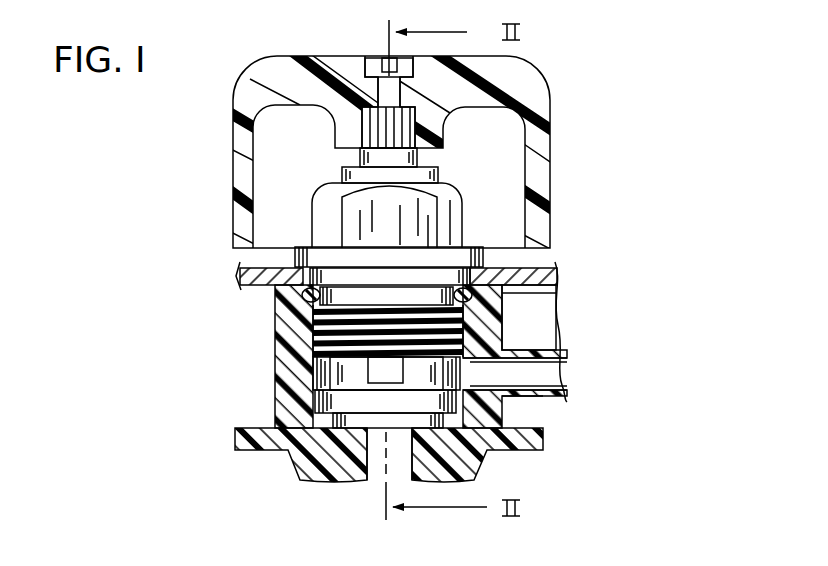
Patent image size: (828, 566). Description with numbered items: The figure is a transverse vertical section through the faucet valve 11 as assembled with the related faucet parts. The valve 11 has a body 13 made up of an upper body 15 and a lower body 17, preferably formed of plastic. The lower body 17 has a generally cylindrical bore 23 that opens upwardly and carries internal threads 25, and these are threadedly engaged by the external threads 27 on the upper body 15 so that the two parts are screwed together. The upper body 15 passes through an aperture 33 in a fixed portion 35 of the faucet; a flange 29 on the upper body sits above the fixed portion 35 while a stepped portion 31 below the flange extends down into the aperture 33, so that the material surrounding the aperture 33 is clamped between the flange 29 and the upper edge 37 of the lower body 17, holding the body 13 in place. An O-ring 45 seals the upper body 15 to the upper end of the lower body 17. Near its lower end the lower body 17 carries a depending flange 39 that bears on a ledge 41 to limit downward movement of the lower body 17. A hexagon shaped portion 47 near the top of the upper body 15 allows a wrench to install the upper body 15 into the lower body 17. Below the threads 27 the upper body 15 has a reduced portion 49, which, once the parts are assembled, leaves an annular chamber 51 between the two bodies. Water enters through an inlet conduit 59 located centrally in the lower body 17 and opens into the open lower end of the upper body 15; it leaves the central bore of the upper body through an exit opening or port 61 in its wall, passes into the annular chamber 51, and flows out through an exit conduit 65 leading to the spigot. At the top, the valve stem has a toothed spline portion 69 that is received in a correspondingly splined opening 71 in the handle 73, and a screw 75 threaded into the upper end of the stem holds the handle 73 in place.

The valve 11 is at (645, 162).
The body 13 is at (202, 342).
The upper body 15 is at (400, 296).
The lower body 17 is at (282, 369).
The cylindrical bore 23 is at (325, 363).
The internal threads 25 is at (502, 323).
The external threads 27 is at (312, 337).
The flange 29 is at (303, 247).
The stepped portion 31 is at (245, 280).
The aperture 33 is at (473, 267).
The fixed portion 35 is at (546, 278).
The upper edge 37 is at (503, 270).
The depending flange 39 is at (275, 408).
The ledge 41 is at (300, 450).
The O-ring 45 is at (553, 297).
The hexagon shaped portion 47 is at (448, 212).
The reduced portion 49 is at (502, 345).
The annular chamber 51 is at (320, 383).
The inlet conduit 59 is at (377, 476).
The exit opening or port 61 is at (383, 375).
The exit conduit 65 is at (555, 392).
The toothed spline portion 69 is at (397, 122).
The splined opening 71 is at (373, 127).
The handle 73 is at (538, 152).
The screw 75 is at (377, 62).